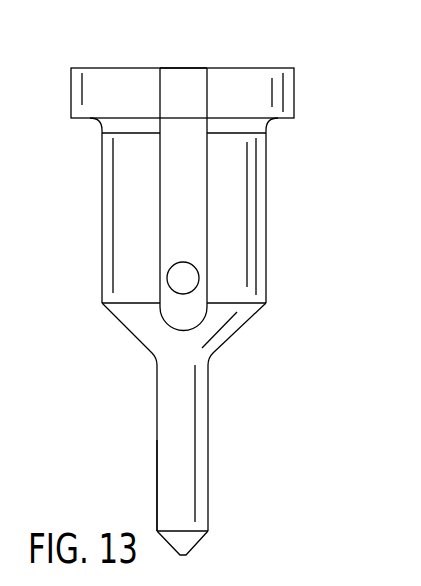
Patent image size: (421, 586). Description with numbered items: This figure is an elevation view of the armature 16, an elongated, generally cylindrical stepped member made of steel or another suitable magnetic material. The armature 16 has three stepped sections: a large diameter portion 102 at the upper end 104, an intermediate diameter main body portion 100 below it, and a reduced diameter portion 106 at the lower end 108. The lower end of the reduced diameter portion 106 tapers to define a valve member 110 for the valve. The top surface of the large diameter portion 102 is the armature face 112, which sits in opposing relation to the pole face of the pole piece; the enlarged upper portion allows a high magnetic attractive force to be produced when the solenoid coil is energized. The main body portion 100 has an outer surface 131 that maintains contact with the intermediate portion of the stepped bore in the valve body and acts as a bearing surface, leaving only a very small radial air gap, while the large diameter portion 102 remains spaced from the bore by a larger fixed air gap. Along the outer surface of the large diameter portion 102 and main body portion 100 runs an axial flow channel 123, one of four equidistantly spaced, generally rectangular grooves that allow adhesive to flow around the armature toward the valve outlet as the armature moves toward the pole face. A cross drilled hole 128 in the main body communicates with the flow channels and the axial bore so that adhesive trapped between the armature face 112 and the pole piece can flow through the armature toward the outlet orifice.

The armature 16 is at (347, 80).
The intermediate diameter main body portion 100 is at (257, 209).
The large diameter portion 102 is at (294, 93).
The upper end 104 is at (105, 125).
The reduced diameter portion 106 is at (198, 465).
The lower end 108 is at (157, 500).
The valve member 110 is at (192, 543).
The armature face 112 is at (158, 82).
The axial flow channel 123 is at (187, 82).
The cross drilled hole 128 is at (178, 283).
The outer surface 131 is at (266, 268).